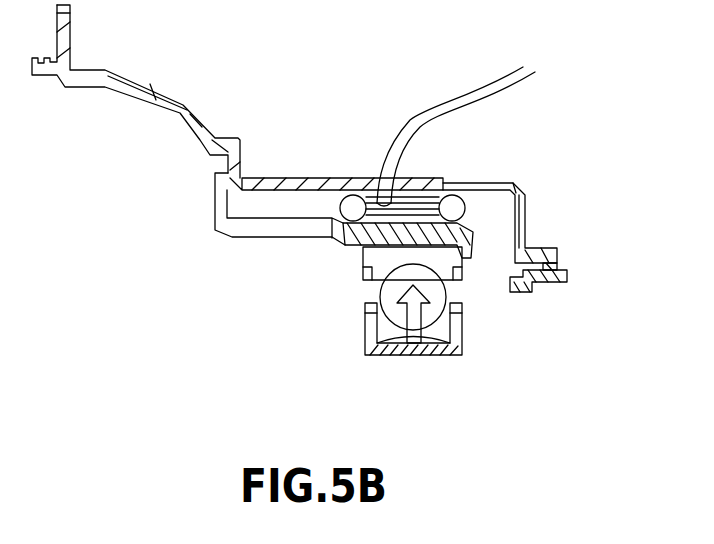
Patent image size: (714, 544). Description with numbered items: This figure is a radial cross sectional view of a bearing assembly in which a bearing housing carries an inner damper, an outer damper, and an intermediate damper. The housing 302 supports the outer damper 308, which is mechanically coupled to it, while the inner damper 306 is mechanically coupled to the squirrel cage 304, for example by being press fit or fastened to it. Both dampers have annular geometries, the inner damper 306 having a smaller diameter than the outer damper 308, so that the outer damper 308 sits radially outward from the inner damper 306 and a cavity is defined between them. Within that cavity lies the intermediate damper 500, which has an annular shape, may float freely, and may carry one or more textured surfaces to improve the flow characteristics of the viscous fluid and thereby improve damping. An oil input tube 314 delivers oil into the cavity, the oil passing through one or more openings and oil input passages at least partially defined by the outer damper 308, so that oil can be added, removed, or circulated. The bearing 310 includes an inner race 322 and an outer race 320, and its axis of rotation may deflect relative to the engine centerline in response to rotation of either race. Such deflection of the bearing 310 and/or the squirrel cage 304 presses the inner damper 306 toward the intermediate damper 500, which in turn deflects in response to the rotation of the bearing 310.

The housing 302 is at (537, 287).
The squirrel cage 304 is at (243, 230).
The inner damper 306 is at (432, 222).
The outer damper 308 is at (403, 198).
The bearing 310 is at (433, 283).
The oil input tube 314 is at (497, 97).
The outer race 320 is at (363, 257).
The inner race 322 is at (378, 332).
The intermediate damper 500 is at (420, 210).